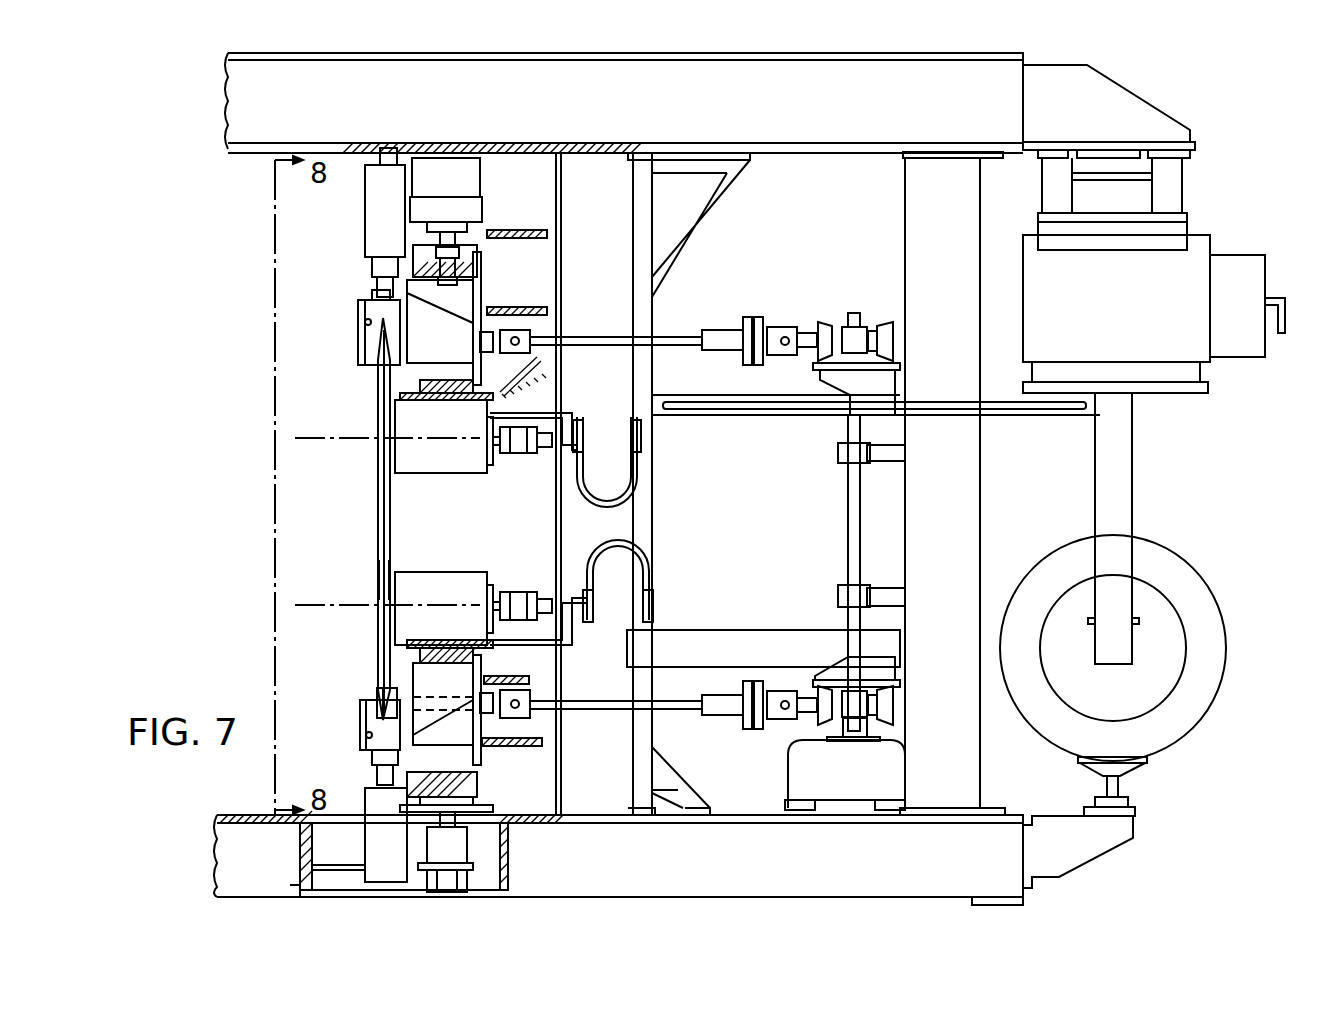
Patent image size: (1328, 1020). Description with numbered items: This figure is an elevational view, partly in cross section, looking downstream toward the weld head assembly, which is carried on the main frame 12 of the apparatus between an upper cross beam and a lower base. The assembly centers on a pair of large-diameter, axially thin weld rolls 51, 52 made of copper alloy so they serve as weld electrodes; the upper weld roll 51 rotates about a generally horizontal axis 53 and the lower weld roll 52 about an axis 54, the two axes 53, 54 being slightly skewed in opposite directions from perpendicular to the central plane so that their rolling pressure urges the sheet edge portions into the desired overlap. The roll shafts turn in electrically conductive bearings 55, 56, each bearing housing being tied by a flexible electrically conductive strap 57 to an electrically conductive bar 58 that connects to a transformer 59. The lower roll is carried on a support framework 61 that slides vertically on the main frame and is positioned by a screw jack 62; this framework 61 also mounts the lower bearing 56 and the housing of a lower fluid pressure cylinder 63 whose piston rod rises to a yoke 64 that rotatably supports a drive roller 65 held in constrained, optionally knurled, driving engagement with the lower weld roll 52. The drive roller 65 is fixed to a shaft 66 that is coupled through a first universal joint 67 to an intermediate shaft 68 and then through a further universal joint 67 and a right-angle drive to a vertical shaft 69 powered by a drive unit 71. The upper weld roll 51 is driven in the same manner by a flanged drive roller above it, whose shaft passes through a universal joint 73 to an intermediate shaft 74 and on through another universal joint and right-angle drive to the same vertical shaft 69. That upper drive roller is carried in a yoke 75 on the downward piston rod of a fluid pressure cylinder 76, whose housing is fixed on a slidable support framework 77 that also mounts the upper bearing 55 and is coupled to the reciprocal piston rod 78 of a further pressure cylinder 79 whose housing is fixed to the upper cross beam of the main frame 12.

The machine frame 12 is at (240, 164).
The upper weld roll 51 is at (378, 390).
The lower weld roll 52 is at (380, 562).
The rotational axis of upper weld roll 53 is at (318, 445).
The rotational axis of lower weld roll 54 is at (318, 606).
The electrically conductive bearing 55 is at (435, 460).
The electrically conductive bearing 56 is at (435, 580).
The flexible electrically conductive strap 57 is at (628, 490).
The electrically conductive bar 58 is at (805, 412).
The transformer 59 is at (1188, 335).
The support framework 61 is at (475, 788).
The screw jack 62 is at (458, 842).
The lower fluid pressure cylinder 63 is at (375, 800).
The yoke 64 is at (362, 740).
The drive roller 65 is at (380, 700).
The shaft 66 is at (438, 703).
The universal joint 67 is at (528, 692).
The intermediate shaft 68 is at (615, 710).
The vertical shaft 69 is at (848, 556).
The drive unit 71 is at (840, 792).
The universal joint 73 is at (520, 333).
The intermediate shaft 74 is at (593, 343).
The yoke 75 is at (360, 312).
The fluid pressure cylinder 76 is at (365, 237).
The slidable support framework 77 is at (470, 265).
The reciprocal piston rod 78 is at (450, 238).
The pressure cylinder 79 is at (463, 188).